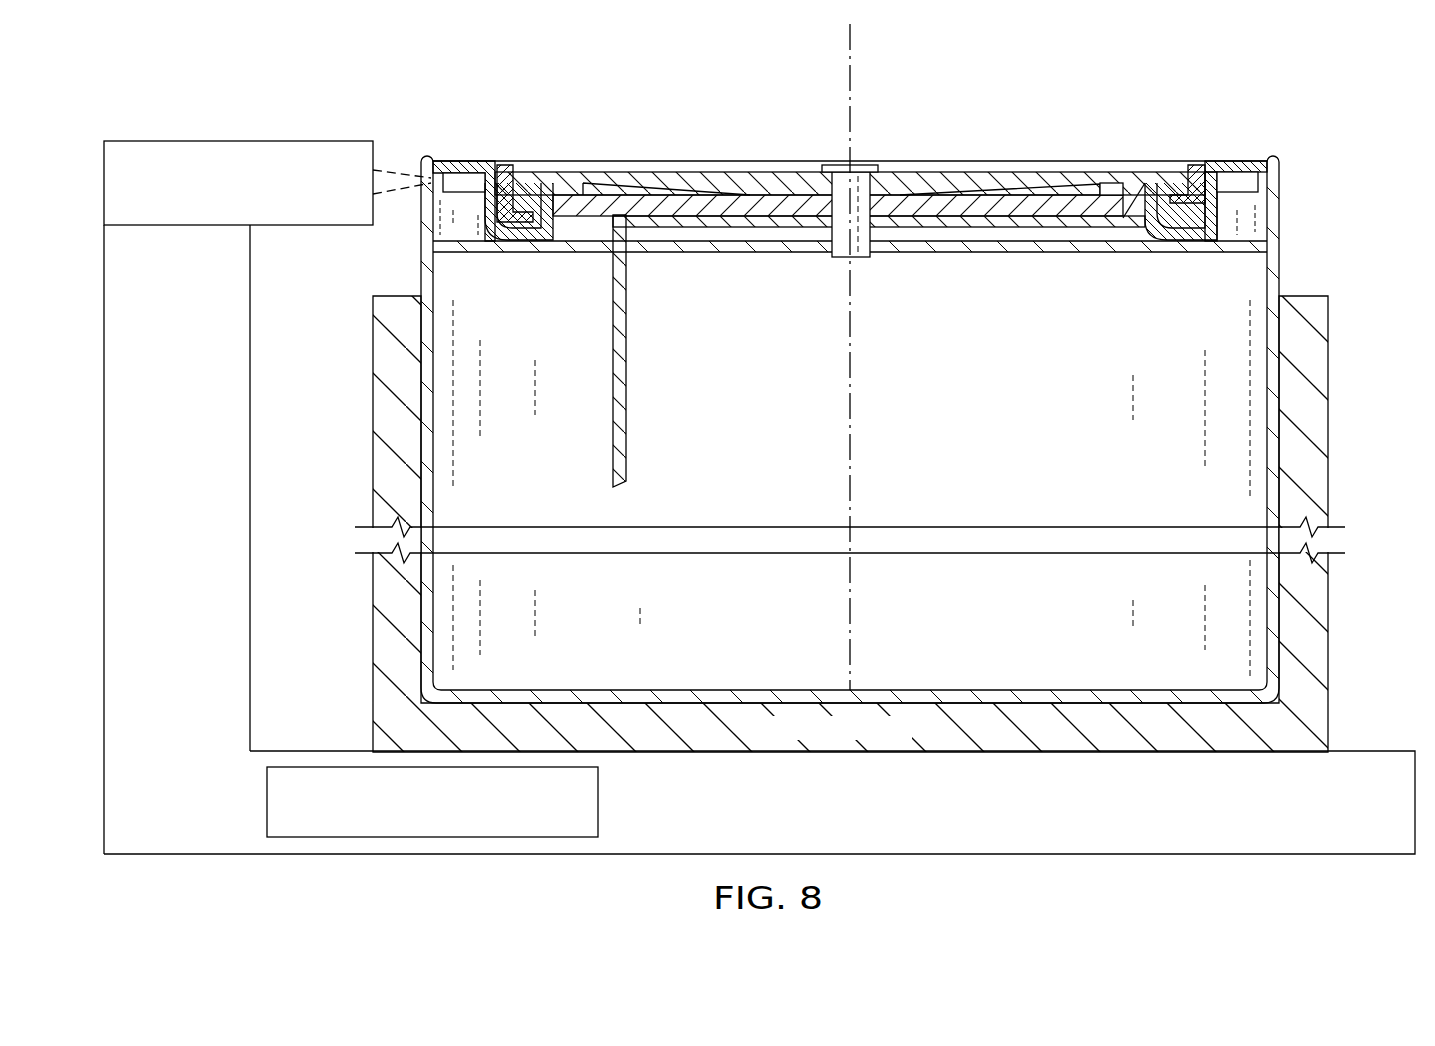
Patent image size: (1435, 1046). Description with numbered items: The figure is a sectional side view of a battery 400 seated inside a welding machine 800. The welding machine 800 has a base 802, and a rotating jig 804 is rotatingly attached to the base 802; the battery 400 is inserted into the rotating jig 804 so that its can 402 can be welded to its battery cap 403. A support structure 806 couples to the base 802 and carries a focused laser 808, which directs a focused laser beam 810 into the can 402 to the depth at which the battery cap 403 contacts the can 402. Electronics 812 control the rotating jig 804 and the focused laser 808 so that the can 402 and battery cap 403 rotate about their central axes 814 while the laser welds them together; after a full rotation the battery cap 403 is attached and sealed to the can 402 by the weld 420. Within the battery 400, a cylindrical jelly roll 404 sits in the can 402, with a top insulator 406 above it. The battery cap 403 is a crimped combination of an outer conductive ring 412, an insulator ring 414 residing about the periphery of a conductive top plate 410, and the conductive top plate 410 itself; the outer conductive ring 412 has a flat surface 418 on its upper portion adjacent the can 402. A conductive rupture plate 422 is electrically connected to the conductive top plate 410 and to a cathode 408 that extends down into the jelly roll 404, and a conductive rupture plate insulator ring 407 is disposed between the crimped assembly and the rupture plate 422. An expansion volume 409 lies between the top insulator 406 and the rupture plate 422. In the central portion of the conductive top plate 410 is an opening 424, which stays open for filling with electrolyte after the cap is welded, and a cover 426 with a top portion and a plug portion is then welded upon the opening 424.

The battery 400 is at (905, 352).
The can 402 is at (1272, 374).
The battery cap 403 is at (851, 269).
The jelly roll 404 is at (898, 626).
The top insulator 406 is at (962, 252).
The conductive rupture plate insulator ring 407 is at (568, 235).
The cathode 408 is at (608, 428).
The expansion volume 409 is at (583, 195).
The conductive top plate 410 is at (957, 175).
The outer conductive ring 412 is at (1208, 175).
The insulator ring 414 is at (503, 170).
The flat surface 418 is at (1260, 163).
The weld 420 is at (436, 160).
The conductive rupture plate 422 is at (1042, 235).
The opening 424 is at (836, 258).
The cover 426 is at (862, 166).
The welding machine 800 is at (759, 464).
The base 802 is at (918, 818).
The rotating jig 804 is at (1048, 740).
The support structure 806 is at (155, 550).
The focused laser 808 is at (240, 142).
The focused laser beam 810 is at (395, 140).
The electronics 812 is at (598, 800).
The central axes 814 is at (852, 41).